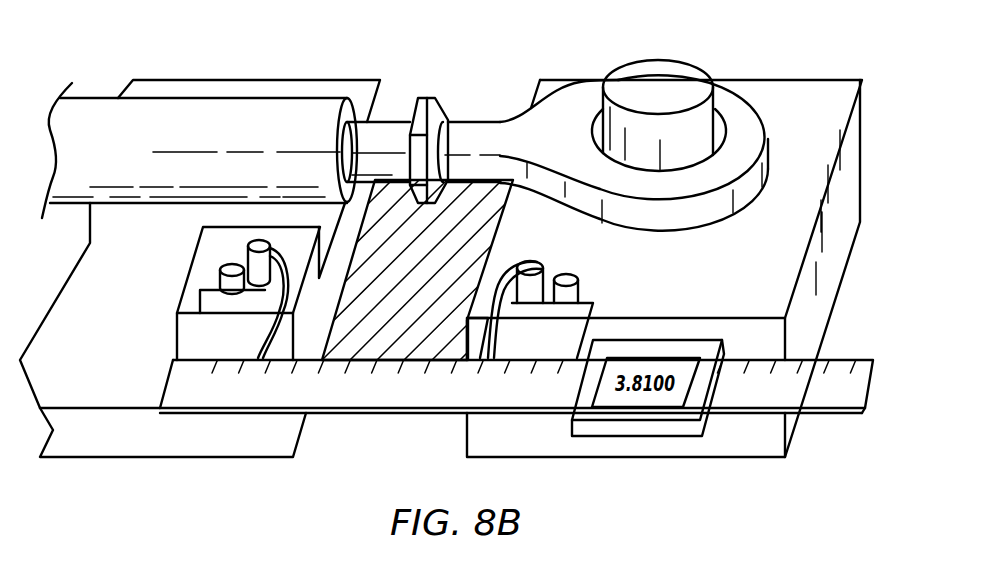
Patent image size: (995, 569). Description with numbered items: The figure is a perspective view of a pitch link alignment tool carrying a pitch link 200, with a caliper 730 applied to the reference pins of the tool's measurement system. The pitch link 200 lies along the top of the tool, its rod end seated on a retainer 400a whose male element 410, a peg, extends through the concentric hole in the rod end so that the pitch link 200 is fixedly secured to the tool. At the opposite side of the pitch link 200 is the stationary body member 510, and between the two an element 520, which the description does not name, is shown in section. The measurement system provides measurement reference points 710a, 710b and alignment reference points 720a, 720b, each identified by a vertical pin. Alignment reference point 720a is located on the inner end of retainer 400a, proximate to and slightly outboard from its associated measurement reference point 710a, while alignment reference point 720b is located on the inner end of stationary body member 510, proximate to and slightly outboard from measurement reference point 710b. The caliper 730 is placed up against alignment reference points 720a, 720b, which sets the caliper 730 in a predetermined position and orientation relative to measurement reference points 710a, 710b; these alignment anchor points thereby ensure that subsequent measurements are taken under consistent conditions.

The pitch link 200 is at (477, 133).
The pitch link retainer 400a is at (797, 98).
The male element 410 is at (665, 78).
The stationary body member 510 is at (182, 110).
The clamp block 520 is at (426, 288).
The measurement reference point 710a is at (540, 258).
The alignment reference point 720a is at (580, 287).
The measurement reference point 710b is at (256, 249).
The alignment reference point 720b is at (231, 272).
The caliper 730 is at (412, 412).